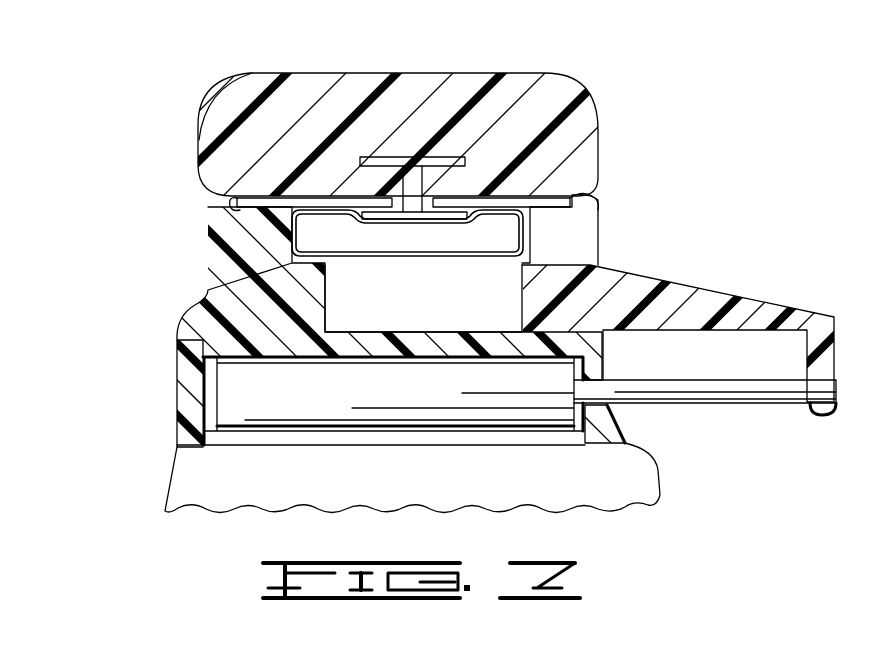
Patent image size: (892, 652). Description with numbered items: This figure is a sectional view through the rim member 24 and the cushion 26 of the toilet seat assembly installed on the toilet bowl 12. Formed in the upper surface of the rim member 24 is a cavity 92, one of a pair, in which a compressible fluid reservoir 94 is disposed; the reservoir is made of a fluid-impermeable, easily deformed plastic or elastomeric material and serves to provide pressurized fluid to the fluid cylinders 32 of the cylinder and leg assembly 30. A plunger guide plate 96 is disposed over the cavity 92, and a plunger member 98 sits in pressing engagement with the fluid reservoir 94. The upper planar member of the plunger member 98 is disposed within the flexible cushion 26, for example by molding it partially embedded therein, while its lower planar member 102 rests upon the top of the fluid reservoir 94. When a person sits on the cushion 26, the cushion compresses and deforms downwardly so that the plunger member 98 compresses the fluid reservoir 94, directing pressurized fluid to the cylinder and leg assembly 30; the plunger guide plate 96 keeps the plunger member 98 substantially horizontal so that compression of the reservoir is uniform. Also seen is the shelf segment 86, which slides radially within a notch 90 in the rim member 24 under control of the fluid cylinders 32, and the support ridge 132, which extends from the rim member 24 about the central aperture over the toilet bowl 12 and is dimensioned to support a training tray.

The cushion 26 is at (342, 73).
The plunger member 98 is at (402, 157).
The plunger guide plate 96 is at (237, 188).
The rim member 24 is at (208, 253).
The cavity 92 is at (530, 240).
The notch 90 is at (416, 303).
The fluid reservoir 94 is at (360, 243).
The lower planar member 102 is at (432, 218).
The shelf segment 86 is at (713, 292).
The fluid cylinder 32 is at (230, 394).
The cylinder and leg assembly 30 is at (273, 430).
The support ridge 132 is at (612, 420).
The toilet bowl 12 is at (192, 472).